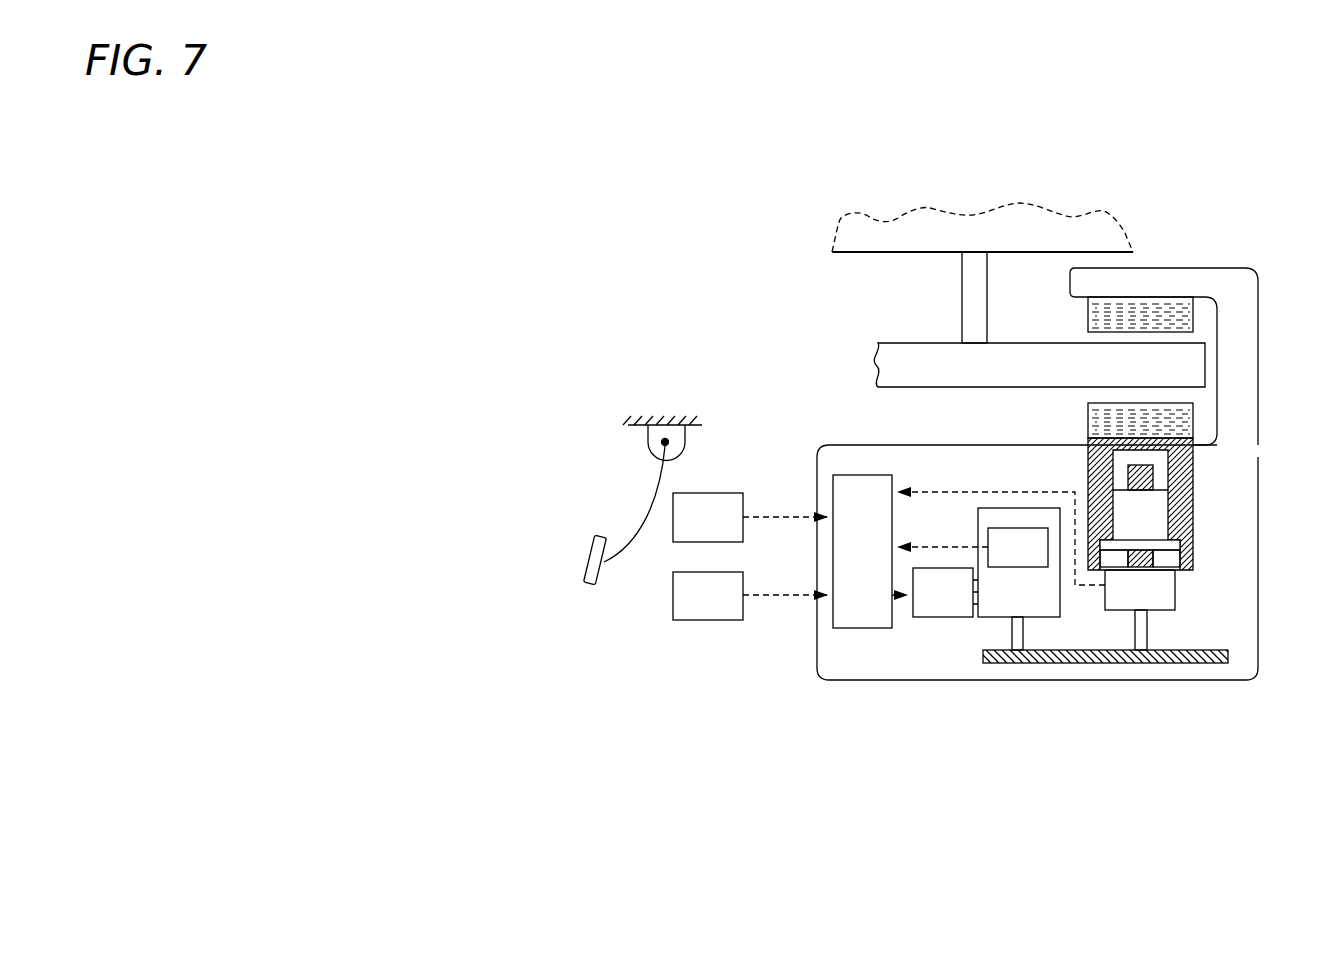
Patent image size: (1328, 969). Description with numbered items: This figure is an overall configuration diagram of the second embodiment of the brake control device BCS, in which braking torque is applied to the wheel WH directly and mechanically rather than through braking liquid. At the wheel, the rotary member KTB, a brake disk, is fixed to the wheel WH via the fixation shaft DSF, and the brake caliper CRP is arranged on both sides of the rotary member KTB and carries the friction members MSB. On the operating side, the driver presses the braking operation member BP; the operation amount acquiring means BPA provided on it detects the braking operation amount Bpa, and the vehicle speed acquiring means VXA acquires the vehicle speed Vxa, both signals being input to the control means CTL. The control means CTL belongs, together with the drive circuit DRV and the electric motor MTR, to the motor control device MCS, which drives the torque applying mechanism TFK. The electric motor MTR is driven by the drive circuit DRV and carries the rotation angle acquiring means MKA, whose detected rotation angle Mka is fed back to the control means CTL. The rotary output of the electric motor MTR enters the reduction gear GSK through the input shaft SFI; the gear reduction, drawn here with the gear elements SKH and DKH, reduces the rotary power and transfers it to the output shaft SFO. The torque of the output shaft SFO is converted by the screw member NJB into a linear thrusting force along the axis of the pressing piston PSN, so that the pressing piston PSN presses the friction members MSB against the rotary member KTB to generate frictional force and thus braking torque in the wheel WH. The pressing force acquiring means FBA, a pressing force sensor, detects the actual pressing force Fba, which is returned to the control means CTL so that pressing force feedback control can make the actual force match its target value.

The wheel WH is at (856, 253).
The fixation shaft DSF is at (962, 298).
The rotary member KTB is at (915, 388).
The friction members MSB is at (1088, 306).
The brake caliper CRP is at (1203, 267).
The brake control device BCS is at (806, 386).
The braking operation member BP is at (589, 555).
The operation amount acquiring means BPA is at (708, 517).
The vehicle speed acquiring means VXA is at (708, 596).
The braking operation amount Bpa is at (785, 499).
The vehicle speed Vxa is at (785, 577).
The control means CTL is at (862, 551).
The pressing force Fba is at (1001, 521).
The rotation angle Mka is at (943, 529).
The drive circuit DRV is at (935, 592).
The electric motor MTR is at (1019, 562).
The rotation angle acquiring means MKA is at (1018, 547).
The input shaft SFI is at (1023, 633).
The output shaft SFO is at (1147, 633).
The reduction gear GSK is at (1137, 725).
The small-diameter gear SKH is at (1005, 663).
The large-diameter gear DKH is at (1103, 663).
The motor control device MCS is at (911, 650).
The pressing piston PSN is at (1194, 480).
The screw member NJB is at (1140, 499).
The pressing force acquiring means FBA is at (1140, 590).
The torque applying mechanism TFK is at (1216, 601).